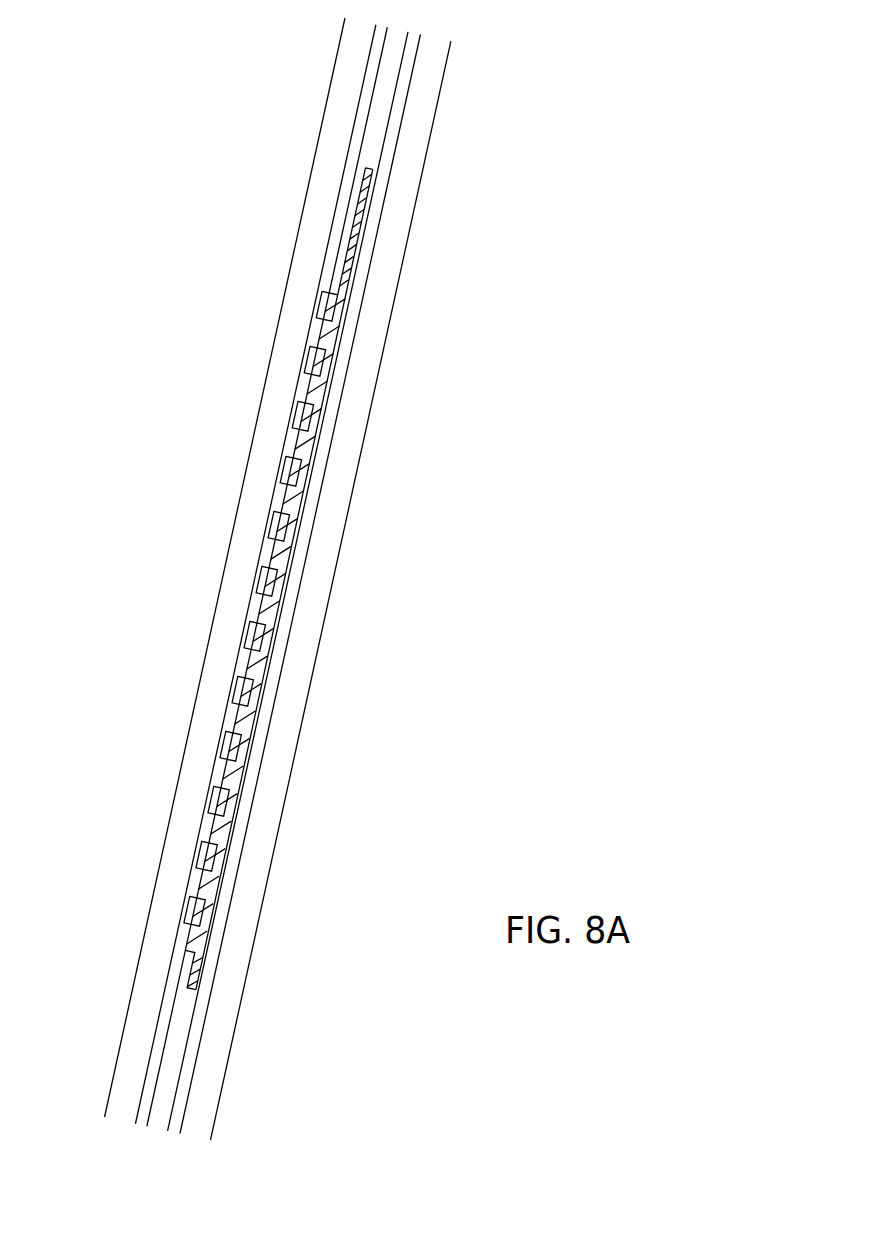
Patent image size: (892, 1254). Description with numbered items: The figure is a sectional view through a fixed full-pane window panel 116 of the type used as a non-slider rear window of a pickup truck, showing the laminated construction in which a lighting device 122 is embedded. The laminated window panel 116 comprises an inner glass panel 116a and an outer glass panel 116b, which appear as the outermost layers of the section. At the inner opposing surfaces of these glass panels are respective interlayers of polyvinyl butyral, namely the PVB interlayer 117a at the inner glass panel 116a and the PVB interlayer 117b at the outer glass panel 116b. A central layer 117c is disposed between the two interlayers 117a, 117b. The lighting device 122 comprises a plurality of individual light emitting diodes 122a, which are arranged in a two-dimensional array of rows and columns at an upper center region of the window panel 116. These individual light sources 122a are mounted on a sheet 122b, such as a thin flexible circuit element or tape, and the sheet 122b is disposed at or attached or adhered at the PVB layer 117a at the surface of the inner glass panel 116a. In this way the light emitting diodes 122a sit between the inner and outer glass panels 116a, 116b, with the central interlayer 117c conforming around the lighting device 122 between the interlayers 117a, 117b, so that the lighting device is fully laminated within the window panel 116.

The fixed full-pane window panel 116 is at (137, 840).
The inner glass panel 116a is at (385, 232).
The outer glass panel 116b is at (302, 257).
The interlayer of polyvinyl butyral 117a is at (343, 322).
The interlayer of polyvinyl butyral 117b is at (298, 356).
The central layer 117c is at (367, 144).
The lighting device 122 is at (293, 472).
The light emitting diodes 122a is at (270, 577).
The sheet 122b is at (295, 517).